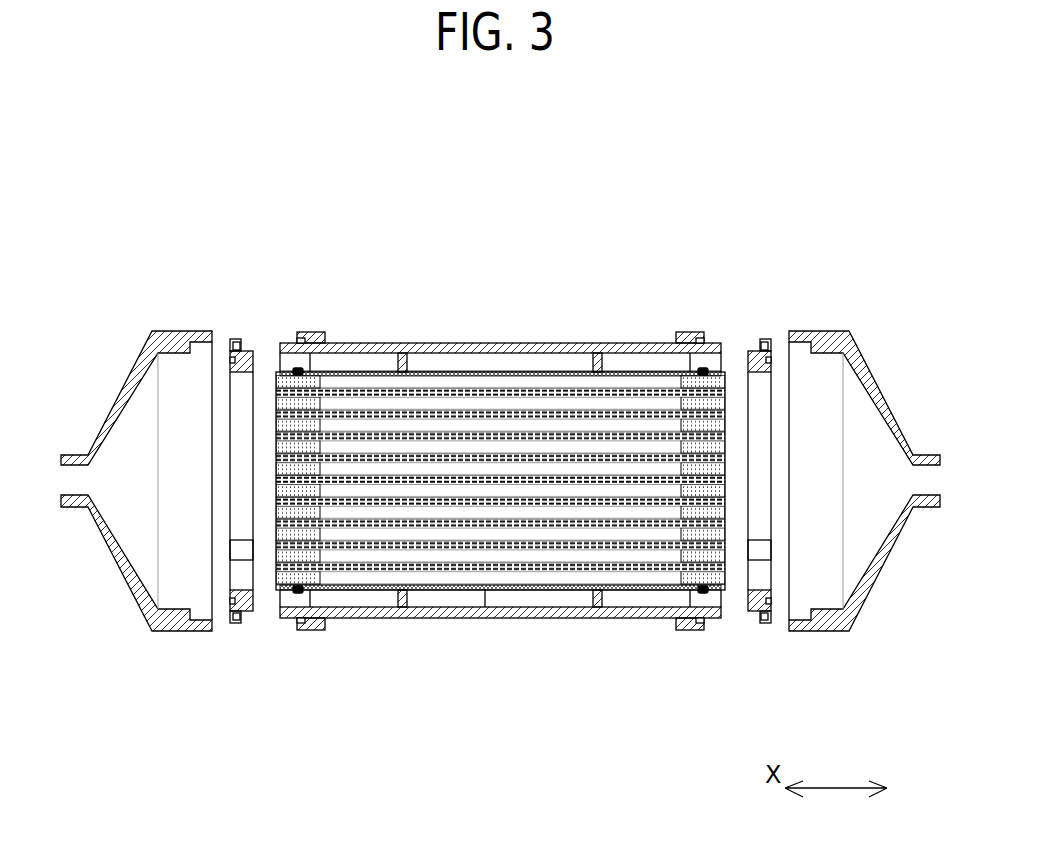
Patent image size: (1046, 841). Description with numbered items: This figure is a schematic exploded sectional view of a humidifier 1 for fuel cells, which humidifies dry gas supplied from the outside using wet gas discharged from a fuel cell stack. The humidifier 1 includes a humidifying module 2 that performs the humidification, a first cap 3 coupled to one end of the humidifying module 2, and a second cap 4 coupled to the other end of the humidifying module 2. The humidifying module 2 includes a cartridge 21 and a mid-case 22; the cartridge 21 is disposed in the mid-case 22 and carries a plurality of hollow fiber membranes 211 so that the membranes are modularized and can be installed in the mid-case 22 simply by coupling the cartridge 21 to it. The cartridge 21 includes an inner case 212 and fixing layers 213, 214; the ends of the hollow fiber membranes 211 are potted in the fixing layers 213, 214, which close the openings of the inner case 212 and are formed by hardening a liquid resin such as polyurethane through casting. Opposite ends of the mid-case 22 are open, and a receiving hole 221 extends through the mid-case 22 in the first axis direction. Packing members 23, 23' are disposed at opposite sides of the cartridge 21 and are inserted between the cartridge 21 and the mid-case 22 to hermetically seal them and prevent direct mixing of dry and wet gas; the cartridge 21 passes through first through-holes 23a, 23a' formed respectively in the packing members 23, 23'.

The humidifier 1 is at (65, 292).
The humidifying module 2 is at (762, 258).
The first cap 3 is at (120, 556).
The second cap 4 is at (887, 556).
The cartridge 21 is at (448, 360).
The hollow fiber membranes 211 is at (565, 573).
The inner case 212 is at (485, 607).
The fixing layer 213 is at (290, 593).
The fixing layer 214 is at (708, 592).
The mid-case 22 is at (532, 350).
The receiving hole 221 is at (651, 599).
The packing member 23 is at (264, 443).
The packing member 23' is at (763, 443).
The first through-hole 23a is at (222, 630).
The first through-hole 23a' is at (780, 630).